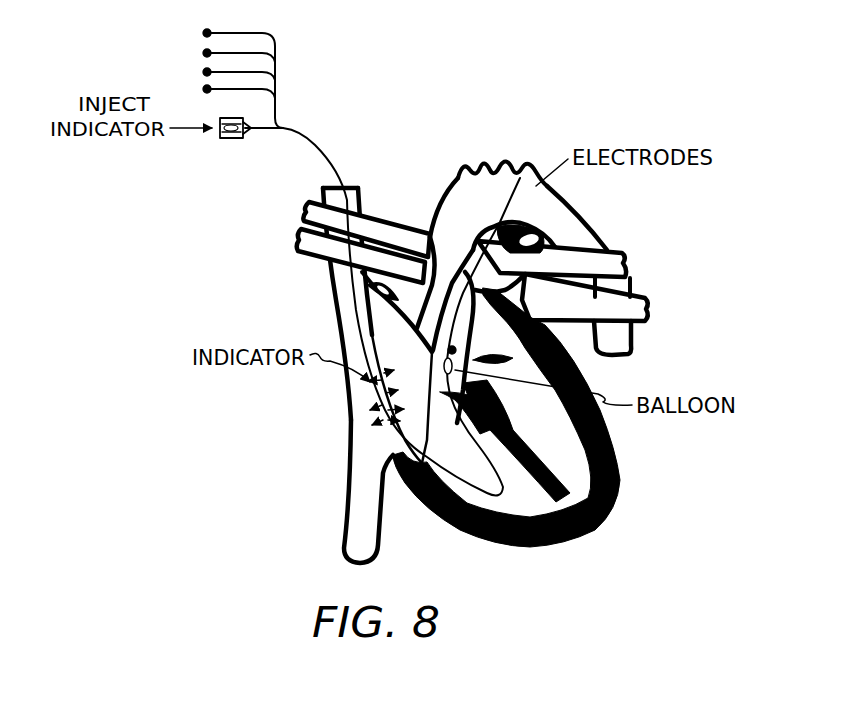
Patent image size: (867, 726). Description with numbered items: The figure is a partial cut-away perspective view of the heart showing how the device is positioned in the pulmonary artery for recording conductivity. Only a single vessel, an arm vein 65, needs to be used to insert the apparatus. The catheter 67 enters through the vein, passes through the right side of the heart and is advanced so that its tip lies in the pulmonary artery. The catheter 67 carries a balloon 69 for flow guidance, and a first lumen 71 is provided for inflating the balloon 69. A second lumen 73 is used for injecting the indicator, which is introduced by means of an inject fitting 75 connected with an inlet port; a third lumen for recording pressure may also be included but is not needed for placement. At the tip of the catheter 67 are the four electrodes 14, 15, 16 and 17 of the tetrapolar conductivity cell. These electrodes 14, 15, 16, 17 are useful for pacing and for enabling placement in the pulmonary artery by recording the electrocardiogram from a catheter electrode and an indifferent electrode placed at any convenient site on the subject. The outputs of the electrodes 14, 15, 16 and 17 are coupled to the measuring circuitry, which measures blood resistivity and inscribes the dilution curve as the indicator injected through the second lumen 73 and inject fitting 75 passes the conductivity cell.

The electrode 14 is at (230, 75).
The electrode 15 is at (226, 53).
The electrode 16 is at (226, 72).
The electrode 17 is at (226, 89).
The inject fitting 75 is at (233, 141).
The second lumen 73 is at (348, 283).
The catheter 67 is at (384, 372).
The vessel (arm vein) 65 is at (357, 389).
The balloon 69 is at (457, 373).
The first lumen 71 is at (500, 494).